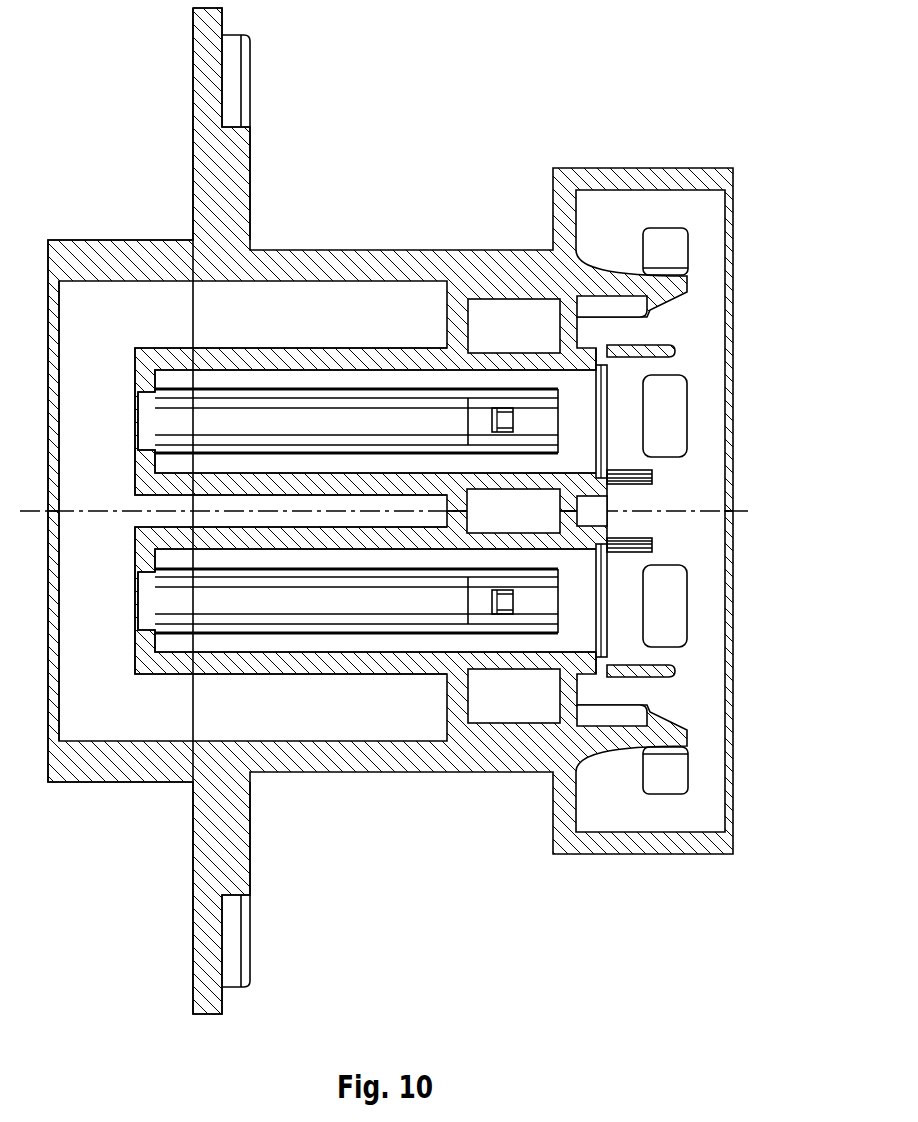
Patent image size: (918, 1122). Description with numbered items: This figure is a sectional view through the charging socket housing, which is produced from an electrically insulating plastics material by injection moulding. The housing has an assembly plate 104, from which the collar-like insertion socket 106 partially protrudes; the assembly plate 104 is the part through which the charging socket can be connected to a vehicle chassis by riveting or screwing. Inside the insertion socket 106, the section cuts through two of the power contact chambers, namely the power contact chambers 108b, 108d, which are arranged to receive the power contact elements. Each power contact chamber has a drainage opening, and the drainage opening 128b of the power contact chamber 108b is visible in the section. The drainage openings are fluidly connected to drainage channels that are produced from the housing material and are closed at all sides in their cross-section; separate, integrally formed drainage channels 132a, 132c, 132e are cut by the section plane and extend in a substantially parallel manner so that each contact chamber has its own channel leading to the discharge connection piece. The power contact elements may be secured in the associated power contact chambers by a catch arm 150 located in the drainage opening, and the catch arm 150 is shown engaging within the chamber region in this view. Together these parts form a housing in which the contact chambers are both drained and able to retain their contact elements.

The assembly plate 104 is at (218, 998).
The insertion socket 106 is at (73, 762).
The power contact chamber 108b is at (160, 665).
The power contact chamber 108d is at (172, 358).
The drainage opening 128b is at (505, 600).
The drainage channel 132a is at (503, 710).
The drainage channel 132c is at (505, 503).
The drainage channel 132e is at (513, 313).
The catch arm 150 is at (505, 418).